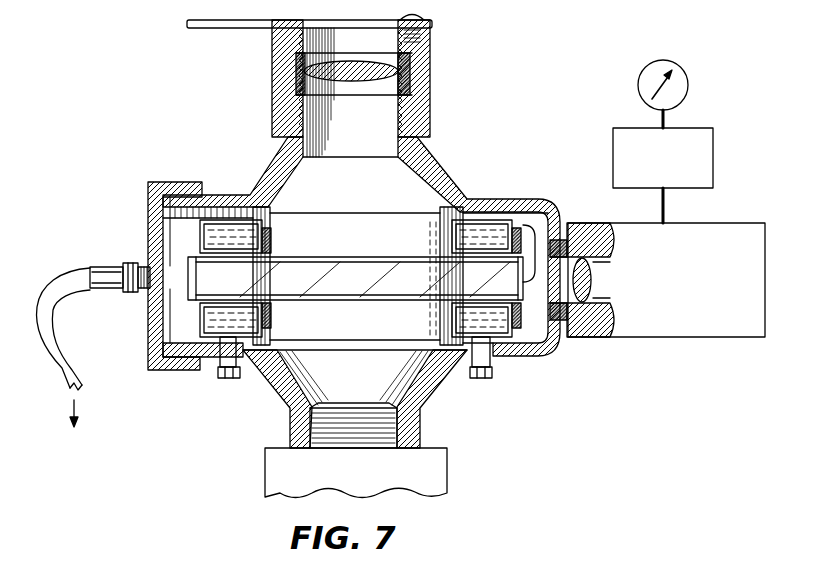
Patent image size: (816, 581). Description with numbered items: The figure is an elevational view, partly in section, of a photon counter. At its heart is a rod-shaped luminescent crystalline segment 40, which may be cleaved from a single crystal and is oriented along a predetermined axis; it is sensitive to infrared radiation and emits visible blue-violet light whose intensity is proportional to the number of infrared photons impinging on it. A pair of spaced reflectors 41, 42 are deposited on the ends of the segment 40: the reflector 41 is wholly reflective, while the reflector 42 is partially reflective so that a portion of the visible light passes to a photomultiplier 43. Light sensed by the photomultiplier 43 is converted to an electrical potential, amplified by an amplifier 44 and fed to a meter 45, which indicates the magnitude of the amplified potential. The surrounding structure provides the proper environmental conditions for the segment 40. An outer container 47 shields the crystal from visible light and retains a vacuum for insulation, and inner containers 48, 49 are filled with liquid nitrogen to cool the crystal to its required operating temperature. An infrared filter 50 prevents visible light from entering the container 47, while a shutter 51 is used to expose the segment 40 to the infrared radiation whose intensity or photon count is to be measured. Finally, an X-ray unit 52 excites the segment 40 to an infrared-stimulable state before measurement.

The crystalline segment 40 is at (339, 256).
The reflector 41 is at (188, 259).
The reflector 42 is at (528, 278).
The photomultiplier 43 is at (653, 338).
The amplifier 44 is at (713, 147).
The meter 45 is at (688, 90).
The outer container 47 is at (266, 178).
The inner container 48 is at (263, 324).
The inner container 49 is at (452, 325).
The infrared filter 50 is at (410, 72).
The shutter 51 is at (222, 29).
The X-ray unit 52 is at (447, 470).